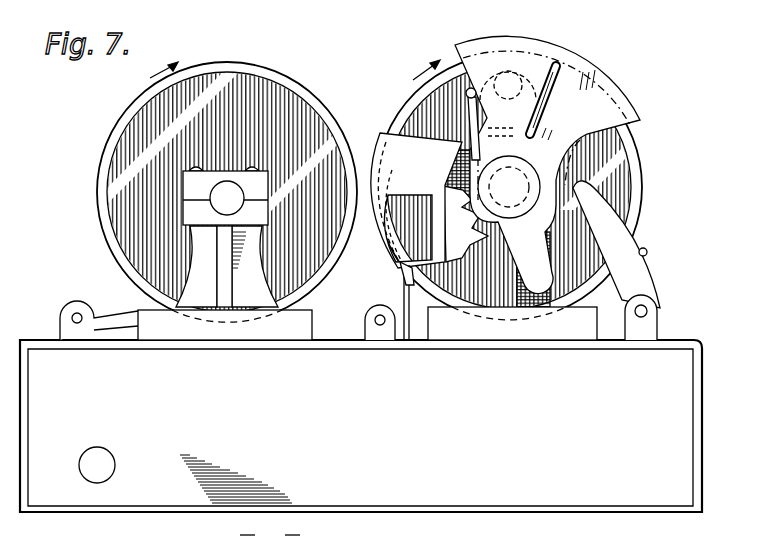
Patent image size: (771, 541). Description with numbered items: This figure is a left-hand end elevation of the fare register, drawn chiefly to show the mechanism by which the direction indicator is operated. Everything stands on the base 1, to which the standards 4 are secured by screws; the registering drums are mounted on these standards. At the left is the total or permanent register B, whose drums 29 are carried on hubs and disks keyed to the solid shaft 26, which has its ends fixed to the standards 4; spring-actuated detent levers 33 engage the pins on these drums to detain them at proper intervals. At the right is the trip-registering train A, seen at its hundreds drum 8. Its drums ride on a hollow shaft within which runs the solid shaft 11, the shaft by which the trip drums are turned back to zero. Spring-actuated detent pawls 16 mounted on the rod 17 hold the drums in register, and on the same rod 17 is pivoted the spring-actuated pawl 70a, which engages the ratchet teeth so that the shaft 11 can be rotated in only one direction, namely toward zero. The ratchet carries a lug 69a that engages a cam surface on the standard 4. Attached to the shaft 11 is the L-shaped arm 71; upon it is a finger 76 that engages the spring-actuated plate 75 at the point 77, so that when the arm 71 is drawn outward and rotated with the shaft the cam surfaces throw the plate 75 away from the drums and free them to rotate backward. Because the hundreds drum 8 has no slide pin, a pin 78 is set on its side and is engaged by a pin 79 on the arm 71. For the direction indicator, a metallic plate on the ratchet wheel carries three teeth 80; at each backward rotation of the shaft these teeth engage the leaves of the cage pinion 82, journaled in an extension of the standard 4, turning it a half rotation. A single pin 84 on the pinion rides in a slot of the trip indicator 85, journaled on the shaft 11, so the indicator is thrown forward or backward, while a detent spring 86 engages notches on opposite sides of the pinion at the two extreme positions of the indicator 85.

The base 1 is at (361, 426).
The standard 4 is at (288, 328).
The hundreds drum 8 is at (610, 149).
The solid shaft 11 is at (291, 537).
The detent pawl 16 is at (617, 315).
The rod 17 is at (646, 311).
The solid shaft 26 is at (227, 237).
The drum 29 is at (97, 184).
The detent lever 33 is at (99, 320).
The lug 69a is at (235, 537).
The spring-actuated pawl 70a is at (635, 273).
The L-shaped arm 71 is at (386, 160).
The spring-actuated plate 75 is at (402, 276).
The finger 76 is at (376, 236).
The point of engagement 77 is at (416, 302).
The pin 78 is at (417, 153).
The pin 79 is at (427, 172).
The teeth 80 is at (514, 269).
The cage pinion 82 is at (512, 90).
The pin 84 is at (541, 102).
The trip indicator 85 is at (606, 88).
The detent spring 86 is at (483, 128).
The trip-registering train A is at (634, 173).
The total or permanent register B is at (251, 80).